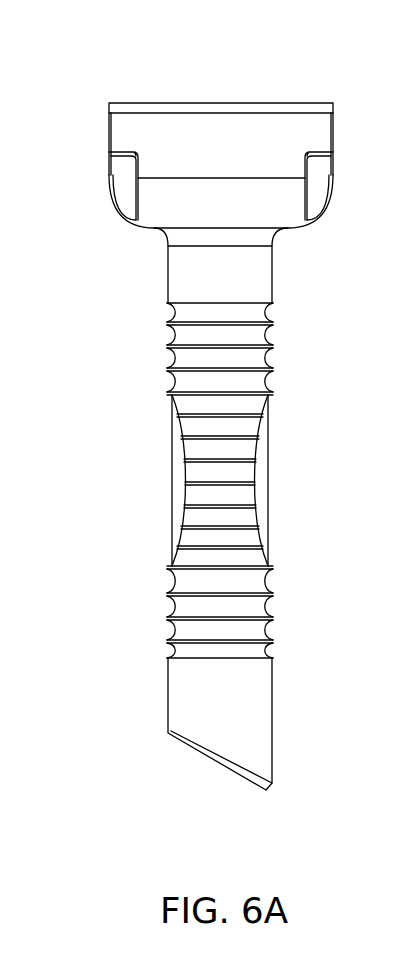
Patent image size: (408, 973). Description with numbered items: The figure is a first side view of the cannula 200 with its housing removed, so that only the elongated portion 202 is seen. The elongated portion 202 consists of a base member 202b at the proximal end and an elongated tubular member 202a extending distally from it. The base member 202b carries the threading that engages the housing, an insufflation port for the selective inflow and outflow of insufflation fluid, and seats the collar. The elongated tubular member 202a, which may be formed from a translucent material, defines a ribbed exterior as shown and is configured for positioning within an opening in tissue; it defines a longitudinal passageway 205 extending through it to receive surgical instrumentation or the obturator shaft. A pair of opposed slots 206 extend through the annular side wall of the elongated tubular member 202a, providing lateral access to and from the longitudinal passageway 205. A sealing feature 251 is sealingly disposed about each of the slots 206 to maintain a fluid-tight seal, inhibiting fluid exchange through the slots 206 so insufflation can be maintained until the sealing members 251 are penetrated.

The cannula 200 is at (145, 53).
The longitudinal passageway 205 is at (250, 100).
The base member 202b is at (290, 200).
The elongated portion 202 is at (121, 279).
The elongated tubular member 202a is at (274, 351).
The slots 206 is at (185, 470).
The sealing feature 251 is at (180, 508).